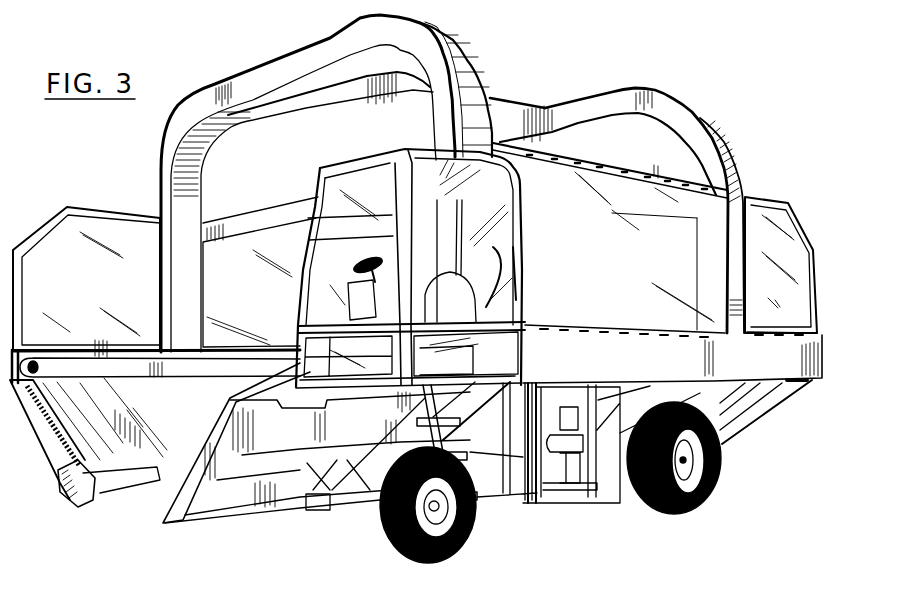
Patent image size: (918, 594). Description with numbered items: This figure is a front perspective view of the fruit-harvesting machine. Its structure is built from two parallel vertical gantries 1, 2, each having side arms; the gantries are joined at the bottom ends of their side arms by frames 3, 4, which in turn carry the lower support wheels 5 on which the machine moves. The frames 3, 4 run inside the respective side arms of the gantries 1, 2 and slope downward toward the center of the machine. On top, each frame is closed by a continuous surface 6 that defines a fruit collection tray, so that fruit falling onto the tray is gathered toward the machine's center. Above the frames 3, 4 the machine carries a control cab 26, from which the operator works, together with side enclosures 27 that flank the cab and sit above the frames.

The vertical gantry 1 is at (285, 57).
The vertical gantry 2 is at (668, 118).
The frame 3 is at (42, 429).
The frame 4 is at (185, 472).
The lower support wheel 5 is at (376, 529).
The continuous surface 6 is at (67, 494).
The control cab 26 is at (473, 163).
The side enclosure 27 is at (129, 267).